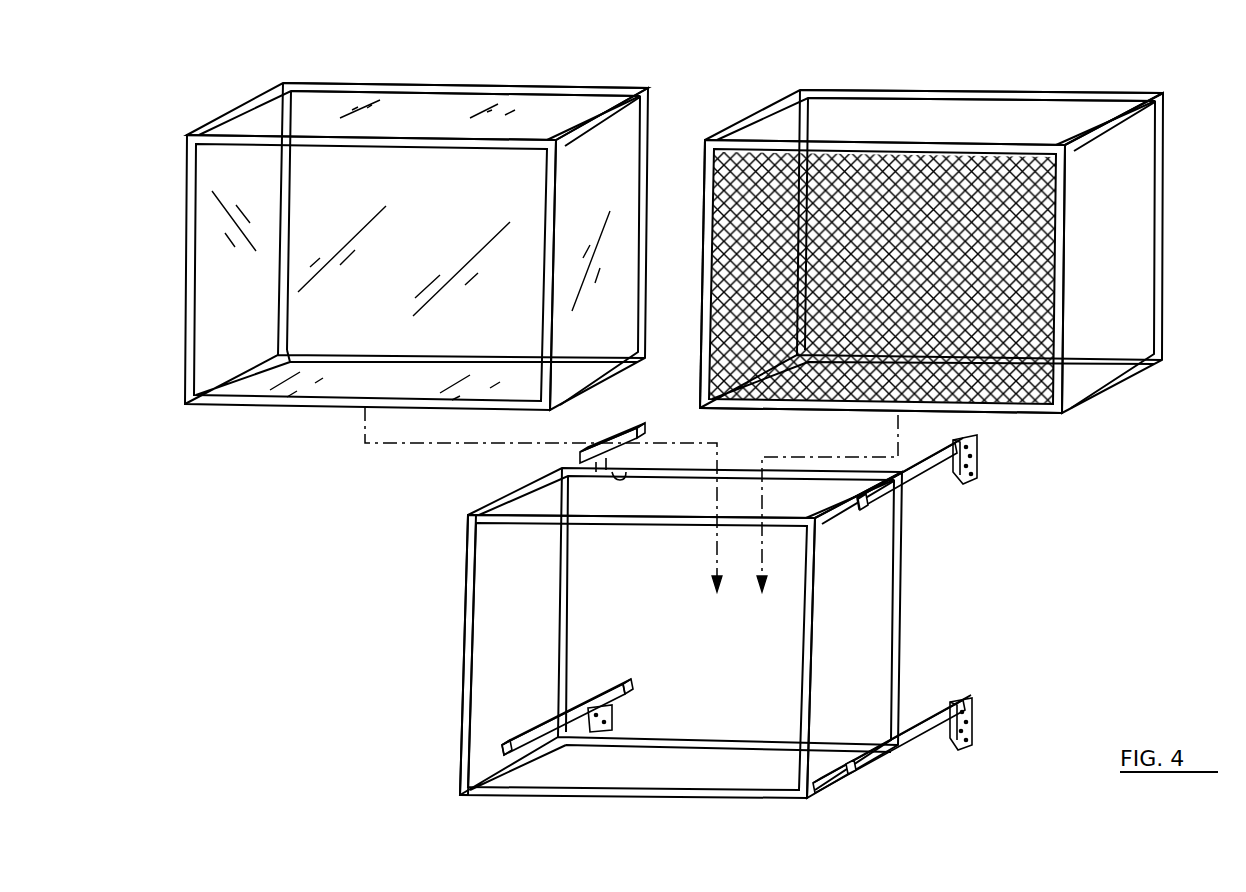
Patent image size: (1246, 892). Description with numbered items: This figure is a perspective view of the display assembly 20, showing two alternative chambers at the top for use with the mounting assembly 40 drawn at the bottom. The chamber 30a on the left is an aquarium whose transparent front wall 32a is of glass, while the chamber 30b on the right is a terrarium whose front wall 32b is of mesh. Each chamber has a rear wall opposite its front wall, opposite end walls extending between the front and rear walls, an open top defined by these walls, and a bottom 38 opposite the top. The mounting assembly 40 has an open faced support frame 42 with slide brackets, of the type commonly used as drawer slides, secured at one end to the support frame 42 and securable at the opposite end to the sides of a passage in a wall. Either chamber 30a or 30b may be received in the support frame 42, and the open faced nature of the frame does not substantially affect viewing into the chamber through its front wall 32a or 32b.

The display assembly 20 is at (466, 802).
The chamber 30a is at (295, 425).
The chamber 30b is at (1032, 430).
The front wall 32a is at (460, 219).
The front wall 32b is at (735, 353).
The bottom 38 is at (815, 414).
The mounting assembly 40 is at (938, 584).
The support frame 42 is at (466, 554).